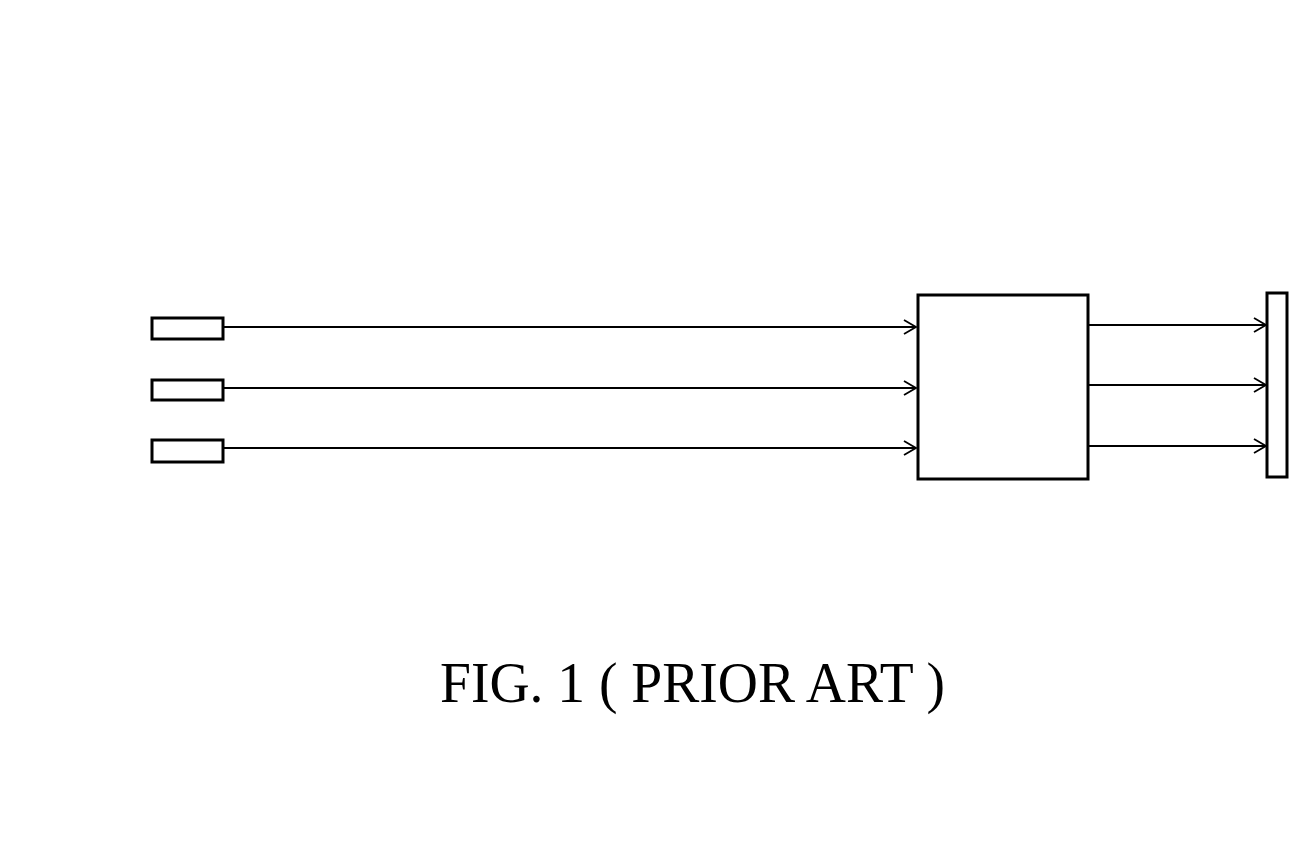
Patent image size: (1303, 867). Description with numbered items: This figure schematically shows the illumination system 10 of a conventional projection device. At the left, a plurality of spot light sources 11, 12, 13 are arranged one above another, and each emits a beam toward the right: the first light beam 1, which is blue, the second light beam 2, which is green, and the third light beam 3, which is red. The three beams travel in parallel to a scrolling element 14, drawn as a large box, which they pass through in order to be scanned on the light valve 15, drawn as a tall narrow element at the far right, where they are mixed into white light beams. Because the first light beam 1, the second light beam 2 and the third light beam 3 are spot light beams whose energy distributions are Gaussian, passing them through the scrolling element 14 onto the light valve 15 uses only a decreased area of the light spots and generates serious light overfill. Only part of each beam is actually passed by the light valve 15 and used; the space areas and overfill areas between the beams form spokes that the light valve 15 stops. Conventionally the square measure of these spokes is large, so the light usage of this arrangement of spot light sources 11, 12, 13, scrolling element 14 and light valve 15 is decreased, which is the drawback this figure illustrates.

The prior art optical system 10 is at (100, 103).
The spot light source 11 is at (153, 328).
The spot light source 12 is at (153, 389).
The spot light source 13 is at (153, 450).
The first light beam 1 is at (724, 325).
The second light beam 2 is at (724, 386).
The third light beam 3 is at (724, 446).
The scrolling element 14 is at (1005, 468).
The light valve 15 is at (1278, 470).